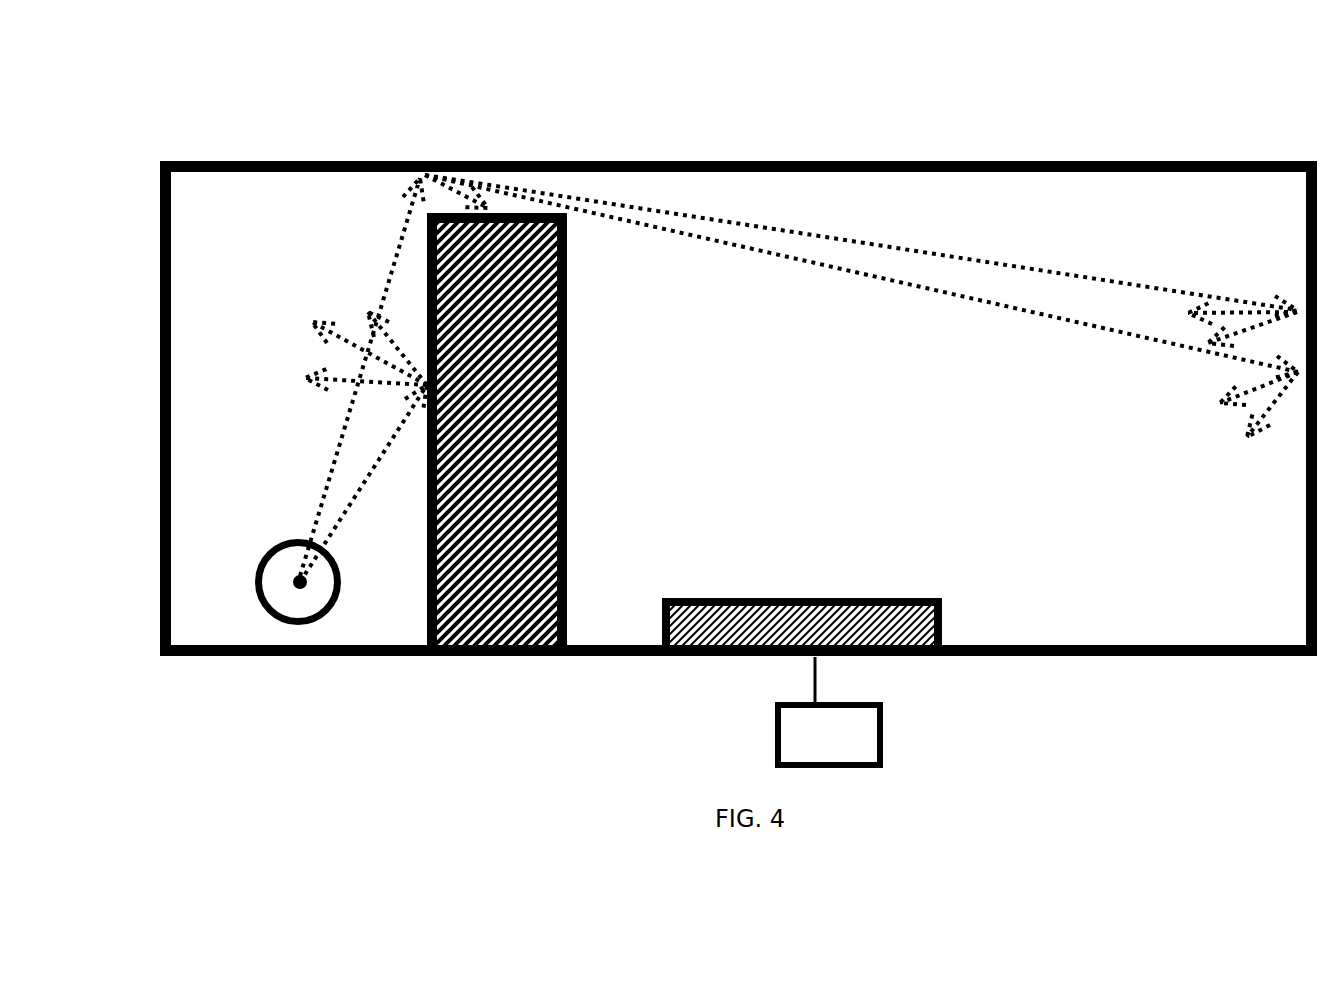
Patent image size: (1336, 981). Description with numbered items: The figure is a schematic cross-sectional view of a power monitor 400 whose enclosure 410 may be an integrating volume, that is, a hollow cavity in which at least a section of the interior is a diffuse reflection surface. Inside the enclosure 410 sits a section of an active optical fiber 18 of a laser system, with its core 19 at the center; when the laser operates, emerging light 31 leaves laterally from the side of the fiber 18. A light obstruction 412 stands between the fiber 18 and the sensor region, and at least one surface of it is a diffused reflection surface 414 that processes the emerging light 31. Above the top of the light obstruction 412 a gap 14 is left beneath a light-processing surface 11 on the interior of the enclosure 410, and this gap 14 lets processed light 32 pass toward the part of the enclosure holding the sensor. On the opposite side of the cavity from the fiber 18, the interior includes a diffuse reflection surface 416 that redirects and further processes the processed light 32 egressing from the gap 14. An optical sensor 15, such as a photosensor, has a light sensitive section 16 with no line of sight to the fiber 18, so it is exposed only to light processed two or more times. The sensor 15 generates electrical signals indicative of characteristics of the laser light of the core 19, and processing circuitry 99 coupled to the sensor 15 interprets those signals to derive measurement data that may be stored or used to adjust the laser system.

The power monitor 400 is at (443, 741).
The enclosure 410 is at (802, 133).
The light-processing surface 11 is at (422, 170).
The gap 14 is at (577, 185).
The processed light 32 is at (945, 198).
The emerging light 31 is at (306, 427).
The active optical fiber 18 is at (262, 572).
The core 19 is at (297, 590).
The light obstruction 412 is at (430, 605).
The diffused reflection surface 414 is at (426, 398).
The diffuse reflection surface 416 is at (1305, 378).
The light sensitive section 16 is at (812, 600).
The optical sensor 15 is at (937, 605).
The processing circuitry 99 is at (829, 711).